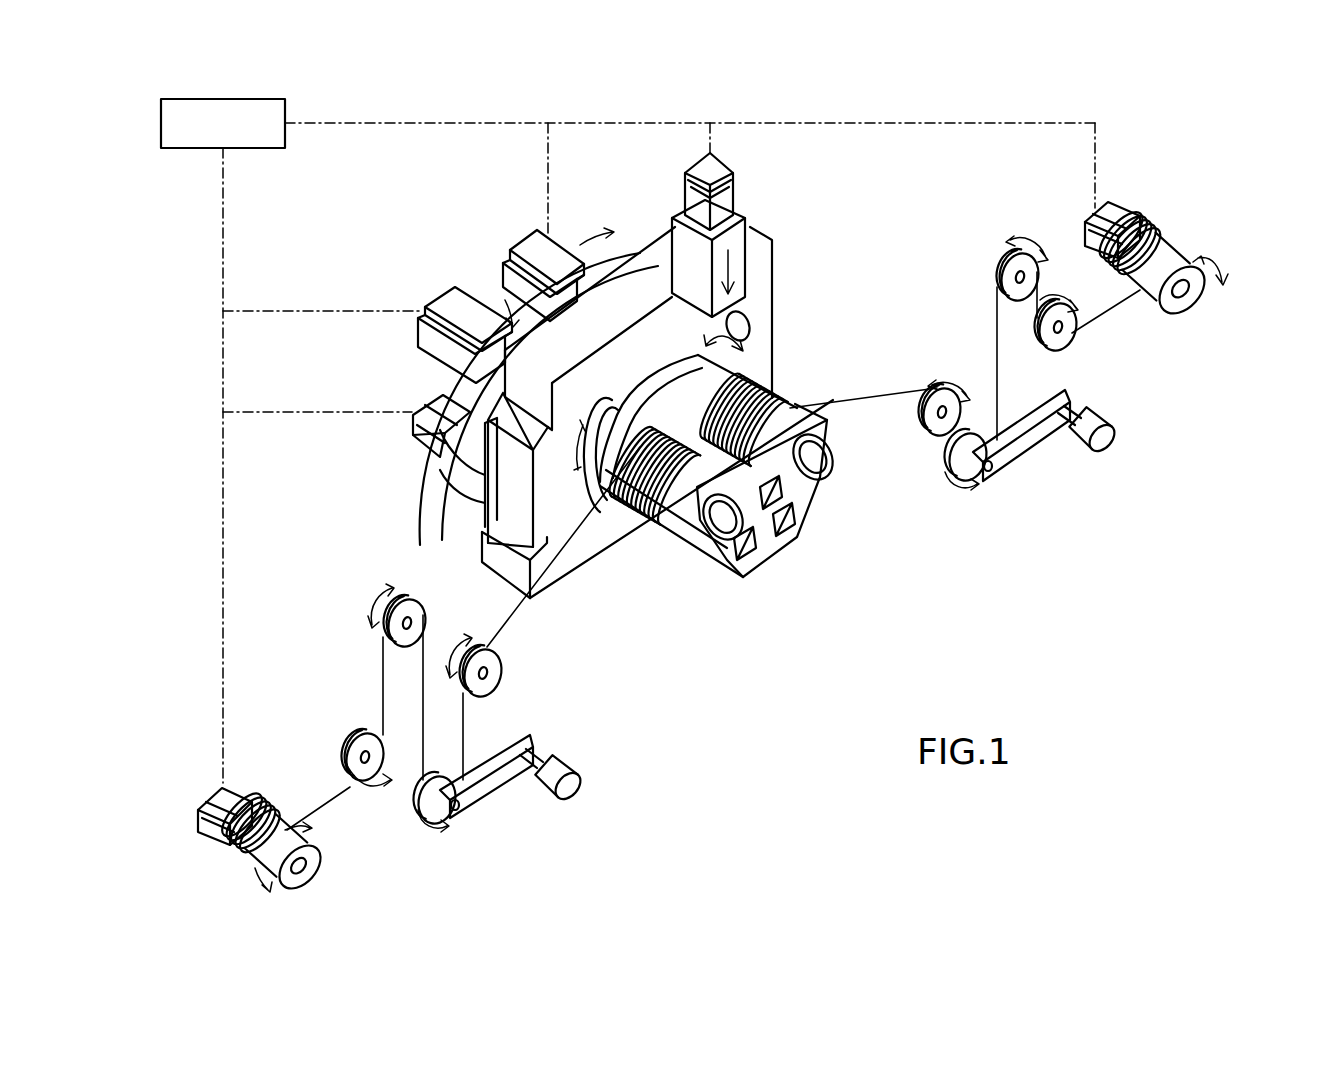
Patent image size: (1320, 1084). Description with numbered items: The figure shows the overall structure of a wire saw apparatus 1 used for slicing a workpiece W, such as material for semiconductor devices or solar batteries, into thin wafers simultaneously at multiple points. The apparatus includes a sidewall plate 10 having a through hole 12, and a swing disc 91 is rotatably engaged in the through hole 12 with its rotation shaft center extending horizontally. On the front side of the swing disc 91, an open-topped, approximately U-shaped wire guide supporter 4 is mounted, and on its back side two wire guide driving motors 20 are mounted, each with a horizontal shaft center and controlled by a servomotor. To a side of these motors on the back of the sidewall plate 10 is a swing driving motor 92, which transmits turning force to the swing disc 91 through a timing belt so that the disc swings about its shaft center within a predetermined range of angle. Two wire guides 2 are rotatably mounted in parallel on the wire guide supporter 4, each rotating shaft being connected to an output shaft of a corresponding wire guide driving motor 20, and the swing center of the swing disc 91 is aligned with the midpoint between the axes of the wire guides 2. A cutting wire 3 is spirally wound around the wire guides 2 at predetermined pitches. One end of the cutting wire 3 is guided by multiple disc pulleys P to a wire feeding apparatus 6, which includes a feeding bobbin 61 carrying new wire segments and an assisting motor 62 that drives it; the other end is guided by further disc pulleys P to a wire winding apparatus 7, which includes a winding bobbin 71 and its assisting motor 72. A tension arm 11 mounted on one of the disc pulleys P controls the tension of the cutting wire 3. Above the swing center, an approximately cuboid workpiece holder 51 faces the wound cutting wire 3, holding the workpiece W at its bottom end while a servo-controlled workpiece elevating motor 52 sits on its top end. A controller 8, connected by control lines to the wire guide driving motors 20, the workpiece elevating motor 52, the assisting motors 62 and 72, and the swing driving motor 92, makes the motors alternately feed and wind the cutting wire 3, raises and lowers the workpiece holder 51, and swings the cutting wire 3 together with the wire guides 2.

The wire saw apparatus 1 is at (1155, 130).
The wire guide 2 is at (690, 415).
The cutting wire 3 is at (857, 395).
The wire guide supporter 4 is at (705, 575).
The wire feeding apparatus 6 is at (158, 840).
The feeding bobbin 61 is at (262, 862).
The assisting motor 62 is at (212, 828).
The wire winding apparatus 7 is at (1236, 160).
The winding bobbin 71 is at (1165, 258).
The assisting motor 72 is at (1150, 212).
The controller 8 is at (286, 110).
The sidewall plate 10 is at (652, 273).
The tension arm 11 is at (495, 780).
The through hole 12 is at (603, 480).
The wire guide driving motor 20 is at (443, 303).
The workpiece holder 51 is at (740, 238).
The workpiece elevating motor 52 is at (728, 192).
The swing disc 91 is at (460, 457).
The swing driving motor 92 is at (428, 440).
The disc pulley P is at (1037, 270).
The workpiece W is at (748, 324).